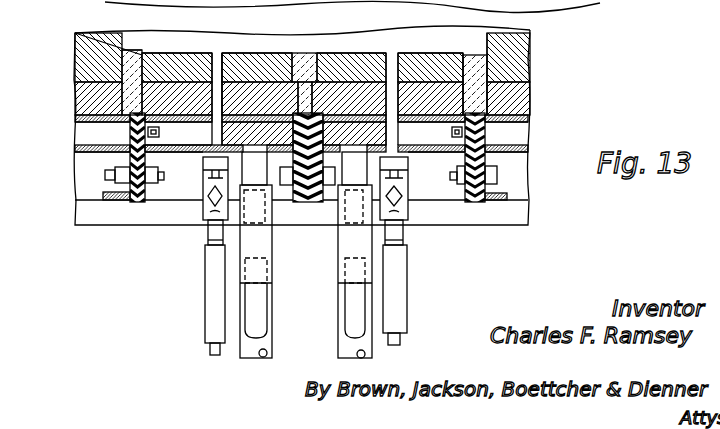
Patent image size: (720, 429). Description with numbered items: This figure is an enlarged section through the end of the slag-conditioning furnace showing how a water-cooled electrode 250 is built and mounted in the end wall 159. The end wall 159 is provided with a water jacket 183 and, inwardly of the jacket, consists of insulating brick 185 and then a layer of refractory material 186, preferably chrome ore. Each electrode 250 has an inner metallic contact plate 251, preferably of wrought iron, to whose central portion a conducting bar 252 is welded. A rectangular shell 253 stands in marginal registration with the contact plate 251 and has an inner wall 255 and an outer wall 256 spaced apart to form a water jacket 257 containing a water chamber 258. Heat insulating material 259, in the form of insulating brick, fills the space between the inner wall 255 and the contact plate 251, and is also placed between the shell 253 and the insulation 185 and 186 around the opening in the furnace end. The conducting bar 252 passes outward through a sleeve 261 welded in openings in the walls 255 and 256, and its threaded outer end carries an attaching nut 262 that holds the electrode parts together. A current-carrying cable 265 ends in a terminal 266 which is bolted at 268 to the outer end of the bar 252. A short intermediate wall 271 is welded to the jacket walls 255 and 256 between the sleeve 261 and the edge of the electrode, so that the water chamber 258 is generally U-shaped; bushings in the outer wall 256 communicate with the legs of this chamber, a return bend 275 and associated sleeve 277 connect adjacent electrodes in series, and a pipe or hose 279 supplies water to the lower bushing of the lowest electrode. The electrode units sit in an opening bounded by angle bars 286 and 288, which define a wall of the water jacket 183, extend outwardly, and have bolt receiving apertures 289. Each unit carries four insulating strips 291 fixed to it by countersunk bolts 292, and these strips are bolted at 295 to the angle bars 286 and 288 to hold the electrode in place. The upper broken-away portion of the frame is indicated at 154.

The frame member 154 is at (402, 6).
The end wall 159 is at (98, 160).
The water jacket 183 is at (100, 133).
The insulating brick 185 is at (77, 99).
The refractory material 186 is at (77, 58).
The electrode 250 is at (243, 50).
The contact plate 251 is at (152, 72).
The conducting bar 252 is at (217, 55).
The rectangular shell 253 is at (150, 100).
The inner wall 255 is at (166, 112).
The outer wall 256 is at (182, 108).
The water jacket 257 is at (432, 158).
The water chamber 258 is at (166, 133).
The heat insulating material 259 is at (287, 95).
The sleeve 261 is at (241, 98).
The attaching nut 262 is at (274, 163).
The current-carrying cable 265 is at (213, 312).
The terminal 266 is at (208, 231).
The bolt 268 is at (212, 182).
The intermediate wall 271 is at (252, 68).
The return bend 275 is at (350, 312).
The sleeve 277 is at (347, 244).
The pipe or hose 279 is at (350, 343).
The angle bar 286 is at (122, 195).
The angle bar 288 is at (508, 197).
The bolt receiving apertures 289 is at (133, 201).
The insulating strips 291 is at (327, 190).
The countersunk bolts 292 is at (452, 133).
The bolts 295 is at (117, 178).